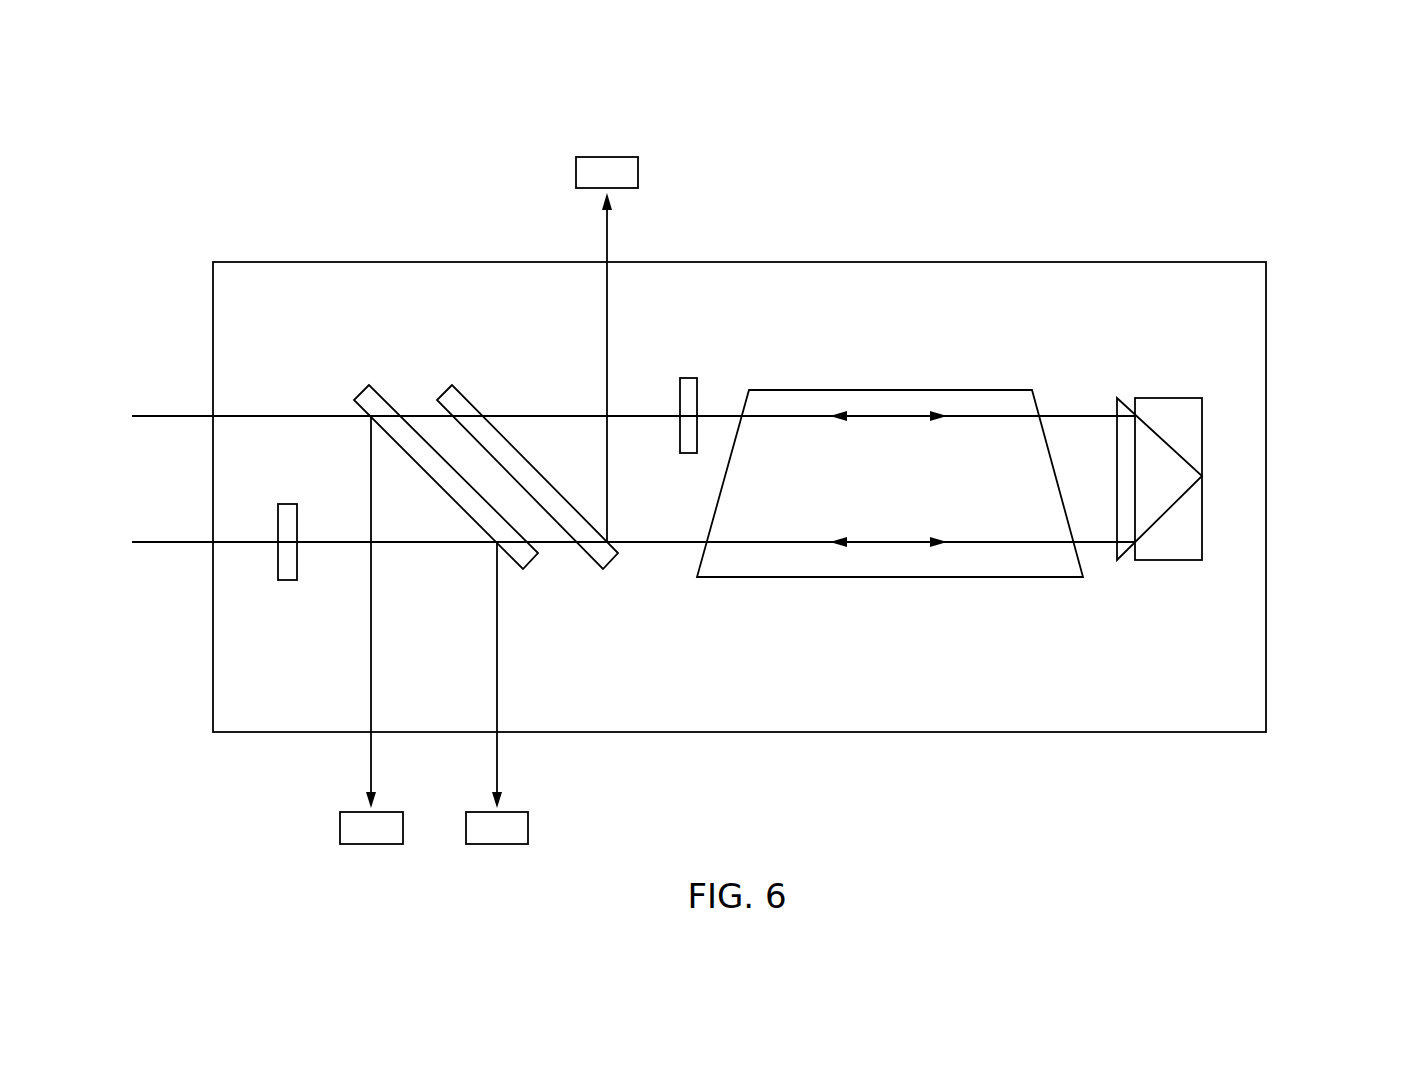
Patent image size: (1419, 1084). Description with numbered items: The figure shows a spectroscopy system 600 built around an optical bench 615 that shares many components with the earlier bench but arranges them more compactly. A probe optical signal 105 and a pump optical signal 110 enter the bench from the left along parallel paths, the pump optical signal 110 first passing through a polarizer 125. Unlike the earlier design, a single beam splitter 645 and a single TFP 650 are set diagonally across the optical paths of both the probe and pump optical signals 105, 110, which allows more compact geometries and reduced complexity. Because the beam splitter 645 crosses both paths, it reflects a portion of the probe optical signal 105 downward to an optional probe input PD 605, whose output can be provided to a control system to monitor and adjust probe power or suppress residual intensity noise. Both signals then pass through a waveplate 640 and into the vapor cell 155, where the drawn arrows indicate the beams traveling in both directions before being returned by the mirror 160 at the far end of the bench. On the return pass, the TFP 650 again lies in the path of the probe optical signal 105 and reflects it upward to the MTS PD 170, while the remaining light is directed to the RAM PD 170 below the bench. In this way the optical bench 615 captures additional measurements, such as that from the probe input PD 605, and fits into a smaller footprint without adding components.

The spectroscopy system 600 is at (1238, 122).
The optical bench 615 is at (1247, 297).
The probe optical signal 105 is at (145, 415).
The pump optical signal 110 is at (155, 542).
The polarizer 125 is at (287, 580).
The beam splitter 645 is at (530, 560).
The TFP 650 is at (465, 397).
The waveplate 640 is at (688, 378).
The vapor cell 155 is at (870, 510).
The mirror 160 is at (1110, 588).
The MTS PD 170 is at (565, 847).
The probe input PD 605 is at (340, 826).